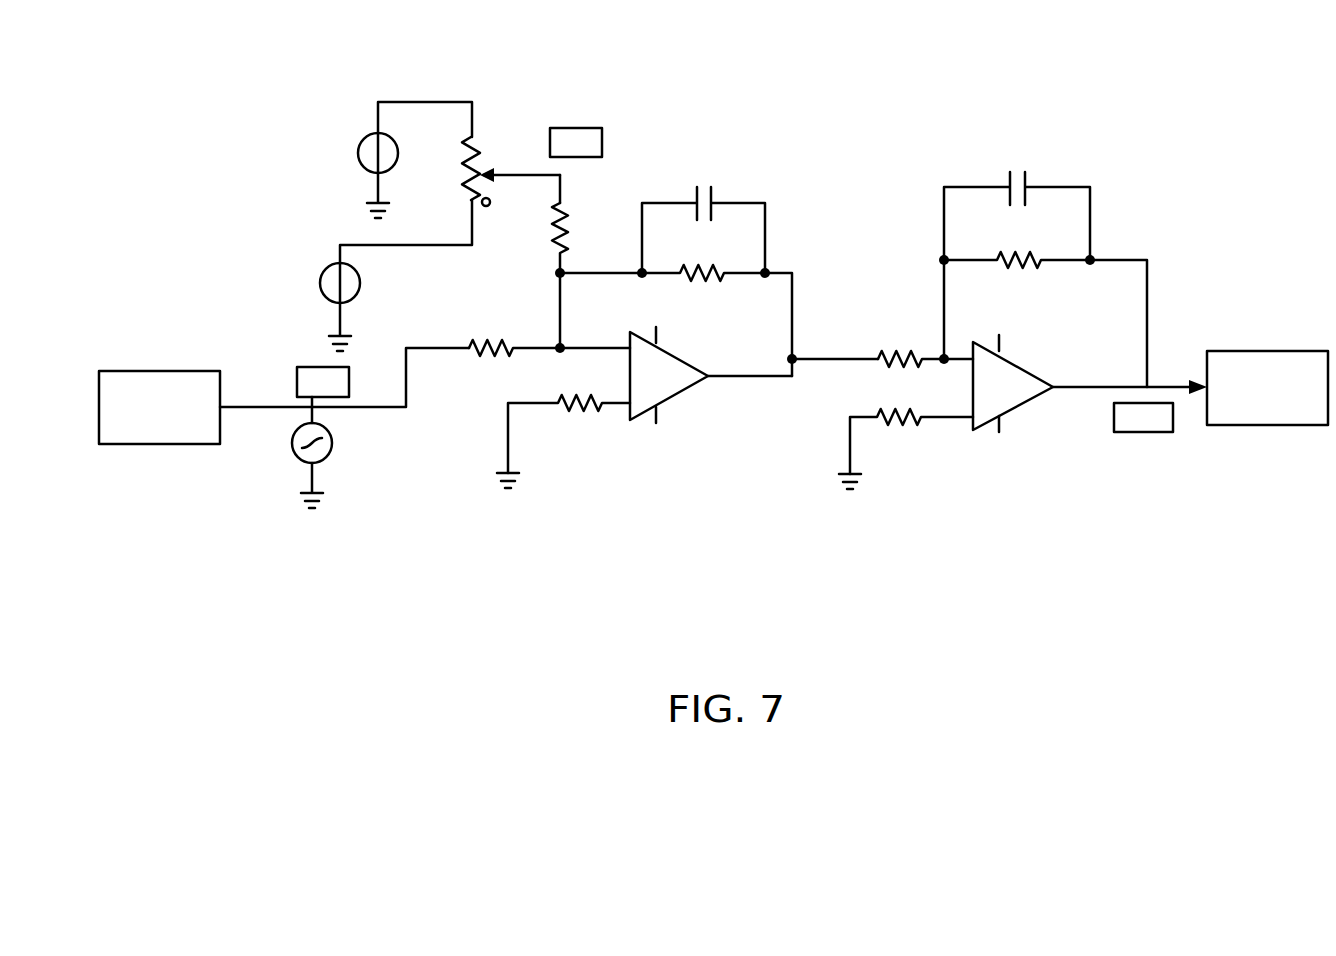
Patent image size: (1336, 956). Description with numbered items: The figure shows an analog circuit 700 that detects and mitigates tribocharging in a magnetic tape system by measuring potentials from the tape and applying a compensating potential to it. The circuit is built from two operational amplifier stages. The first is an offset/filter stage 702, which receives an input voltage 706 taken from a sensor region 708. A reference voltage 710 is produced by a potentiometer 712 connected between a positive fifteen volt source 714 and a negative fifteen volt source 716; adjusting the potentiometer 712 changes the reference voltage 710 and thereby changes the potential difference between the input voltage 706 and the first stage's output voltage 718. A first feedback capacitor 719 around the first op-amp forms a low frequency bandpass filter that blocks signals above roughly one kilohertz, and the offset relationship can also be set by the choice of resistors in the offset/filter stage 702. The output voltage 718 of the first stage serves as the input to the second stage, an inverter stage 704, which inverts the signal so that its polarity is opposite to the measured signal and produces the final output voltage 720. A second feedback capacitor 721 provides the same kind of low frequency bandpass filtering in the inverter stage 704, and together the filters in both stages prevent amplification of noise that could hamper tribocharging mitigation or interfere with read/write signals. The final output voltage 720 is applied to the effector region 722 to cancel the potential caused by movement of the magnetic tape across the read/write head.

The analog circuit 700 is at (748, 679).
The offset/filter stage 702 is at (817, 512).
The inverter stage 704 is at (1195, 512).
The input voltage (Vin) 706 is at (307, 367).
The sensor region 708 is at (167, 371).
The reference voltage (Vp) 710 is at (579, 128).
The potentiometer 712 is at (483, 128).
The +15 v source 714 is at (372, 132).
The −15 v source 716 is at (331, 265).
The output voltage (Vout') 718 is at (819, 359).
The feedback capacitor C1 719 is at (714, 155).
The final output voltage (Vout") 720 is at (1148, 432).
The feedback capacitor C2 721 is at (1023, 137).
The effector region 722 is at (1242, 351).